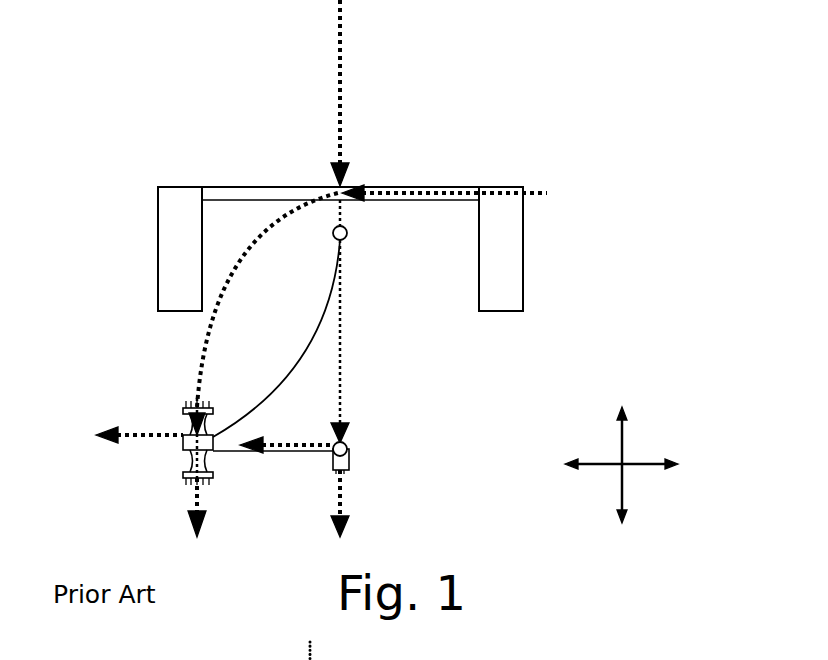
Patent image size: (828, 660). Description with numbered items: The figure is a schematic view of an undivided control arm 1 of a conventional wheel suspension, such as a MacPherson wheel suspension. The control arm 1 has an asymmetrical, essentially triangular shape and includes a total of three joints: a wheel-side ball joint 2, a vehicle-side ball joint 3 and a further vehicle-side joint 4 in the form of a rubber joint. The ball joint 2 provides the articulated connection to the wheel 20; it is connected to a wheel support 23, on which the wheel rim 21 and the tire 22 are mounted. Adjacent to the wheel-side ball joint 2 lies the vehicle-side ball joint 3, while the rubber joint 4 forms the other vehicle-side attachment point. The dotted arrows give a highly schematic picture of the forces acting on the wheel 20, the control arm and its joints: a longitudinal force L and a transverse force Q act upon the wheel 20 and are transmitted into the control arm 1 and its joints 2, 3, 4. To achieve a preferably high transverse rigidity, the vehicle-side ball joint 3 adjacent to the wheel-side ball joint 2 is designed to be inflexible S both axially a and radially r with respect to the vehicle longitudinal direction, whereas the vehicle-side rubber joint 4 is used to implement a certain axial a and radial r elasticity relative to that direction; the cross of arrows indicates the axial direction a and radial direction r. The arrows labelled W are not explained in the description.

The control arm 1 is at (310, 392).
The ball joint 2 is at (344, 238).
The vehicle-side ball joint 3 is at (347, 443).
The rubber joint 4 is at (185, 410).
The wheel 20 is at (466, 170).
The wheel rim 21 is at (210, 187).
The tire 22 is at (515, 275).
The wheel support 23 is at (347, 231).
The transverse force Q is at (343, 80).
The longitudinal force L is at (547, 192).
The wheel force W is at (130, 437).
The inflexible S is at (328, 452).
The radial direction r is at (623, 434).
The axial direction a is at (660, 462).